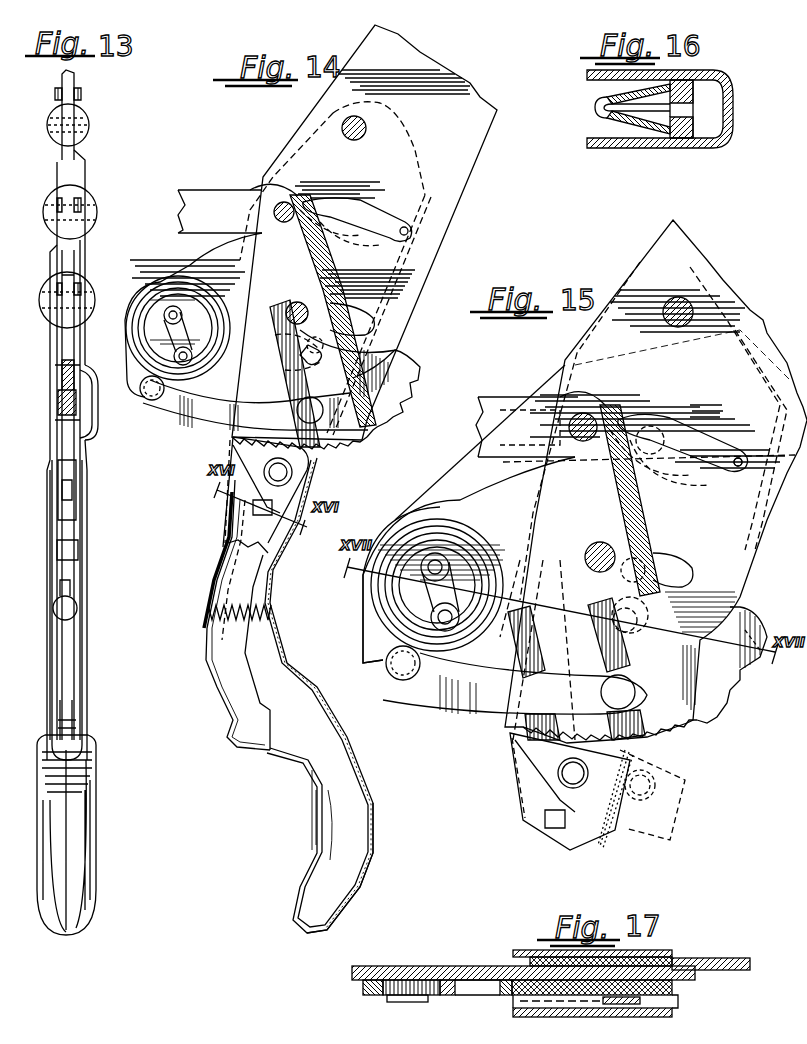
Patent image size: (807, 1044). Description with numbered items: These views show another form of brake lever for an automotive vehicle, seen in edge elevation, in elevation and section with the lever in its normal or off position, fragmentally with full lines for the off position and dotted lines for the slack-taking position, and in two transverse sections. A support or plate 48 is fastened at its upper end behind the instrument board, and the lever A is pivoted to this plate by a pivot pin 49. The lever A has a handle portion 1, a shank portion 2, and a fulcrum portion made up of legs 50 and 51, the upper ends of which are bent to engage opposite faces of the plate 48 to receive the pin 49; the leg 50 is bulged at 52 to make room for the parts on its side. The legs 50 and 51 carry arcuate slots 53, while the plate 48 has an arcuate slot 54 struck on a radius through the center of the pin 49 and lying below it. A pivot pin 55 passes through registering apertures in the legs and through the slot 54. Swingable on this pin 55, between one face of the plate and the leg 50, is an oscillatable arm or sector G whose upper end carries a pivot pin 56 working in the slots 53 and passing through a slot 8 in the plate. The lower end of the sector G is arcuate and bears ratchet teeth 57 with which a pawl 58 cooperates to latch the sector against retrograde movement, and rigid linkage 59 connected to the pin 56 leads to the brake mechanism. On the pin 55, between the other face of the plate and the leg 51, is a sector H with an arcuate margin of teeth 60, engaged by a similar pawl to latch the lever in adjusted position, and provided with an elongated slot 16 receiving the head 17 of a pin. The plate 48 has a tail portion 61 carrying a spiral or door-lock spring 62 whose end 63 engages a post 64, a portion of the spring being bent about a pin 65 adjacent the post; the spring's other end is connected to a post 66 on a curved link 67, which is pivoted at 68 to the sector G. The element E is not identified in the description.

In FIG. 14, the handle portion 1 is at (352, 875).
In FIG. 14, the shank portion 2 is at (280, 645).
In FIG. 14, the slot 8 is at (393, 224).
In FIG. 15, the slot 8 is at (743, 433).
In FIG. 14, the elongated slot 16 is at (300, 355).
In FIG. 14, the head 17 is at (318, 352).
In FIG. 13, the support or plate 48 is at (70, 85).
In FIG. 14, the support or plate 48 is at (460, 190).
In FIG. 15, the support or plate 48 is at (657, 258).
In FIG. 17, the support or plate 48 is at (695, 978).
In FIG. 13, the pivot pin 49 is at (80, 130).
In FIG. 14, the pivot pin 49 is at (368, 131).
In FIG. 15, the pivot pin 49 is at (690, 313).
In FIG. 13, the leg 50 is at (85, 260).
In FIG. 13, the leg 51 is at (52, 268).
In FIG. 17, the leg 51 is at (550, 1015).
In FIG. 13, the bulge 52 is at (100, 420).
In FIG. 17, the bulge 52 is at (520, 950).
In FIG. 14, the arcuate slots 53 is at (340, 215).
In FIG. 15, the arcuate slots 53 is at (679, 449).
In FIG. 14, the arcuate slot 54 is at (395, 326).
In FIG. 15, the arcuate slot 54 is at (673, 553).
In FIG. 13, the pivot pin 55 is at (47, 308).
In FIG. 14, the pivot pin 55 is at (308, 315).
In FIG. 15, the pivot pin 55 is at (587, 560).
In FIG. 13, the pivot pin 56 is at (98, 213).
In FIG. 14, the pivot pin 56 is at (270, 188).
In FIG. 15, the pivot pin 56 is at (585, 413).
In FIG. 14, the ratchet teeth 57 is at (325, 452).
In FIG. 15, the ratchet teeth 57 is at (657, 745).
In FIG. 14, the pawl 58 is at (233, 445).
In FIG. 15, the pawl 58 is at (530, 753).
In FIG. 16, the pawl 58 is at (680, 140).
In FIG. 13, the rigid linkage 59 is at (92, 198).
In FIG. 14, the rigid linkage 59 is at (215, 193).
In FIG. 15, the rigid linkage 59 is at (490, 408).
In FIG. 14, the teeth 60 is at (395, 418).
In FIG. 15, the teeth 60 is at (757, 680).
In FIG. 15, the tail portion 61 is at (368, 635).
In FIG. 15, the spiral or door-lock spring 62 is at (473, 618).
In FIG. 17, the spiral or door-lock spring 62 is at (363, 987).
In FIG. 15, the spring end 63 is at (430, 572).
In FIG. 14, the post 64 is at (178, 328).
In FIG. 15, the post 64 is at (413, 523).
In FIG. 15, the pin 65 is at (448, 620).
In FIG. 14, the post 66 is at (152, 388).
In FIG. 15, the post 66 is at (395, 677).
In FIG. 17, the post 66 is at (405, 998).
In FIG. 14, the curved link 67 is at (255, 405).
In FIG. 15, the curved link 67 is at (453, 686).
In FIG. 17, the curved link 67 is at (495, 995).
In FIG. 14, the pivot 68 is at (310, 410).
In FIG. 15, the pivot 68 is at (627, 694).
In FIG. 17, the pivot 68 is at (607, 1004).
In FIG. 13, the lever A is at (84, 555).
In FIG. 14, the lever A is at (268, 593).
In FIG. 15, the lever A is at (607, 837).
In FIG. 16, the lever A is at (727, 115).
In FIG. 13, the handle member E is at (62, 548).
In FIG. 14, the handle member E is at (212, 655).
In FIG. 13, the oscillatable arm or sector G is at (76, 275).
In FIG. 14, the oscillatable arm or sector G is at (347, 437).
In FIG. 15, the oscillatable arm or sector G is at (690, 733).
In FIG. 17, the oscillatable arm or sector G is at (674, 998).
In FIG. 13, the sector H is at (60, 380).
In FIG. 14, the sector H is at (417, 382).
In FIG. 15, the sector H is at (740, 607).
In FIG. 17, the sector H is at (727, 958).